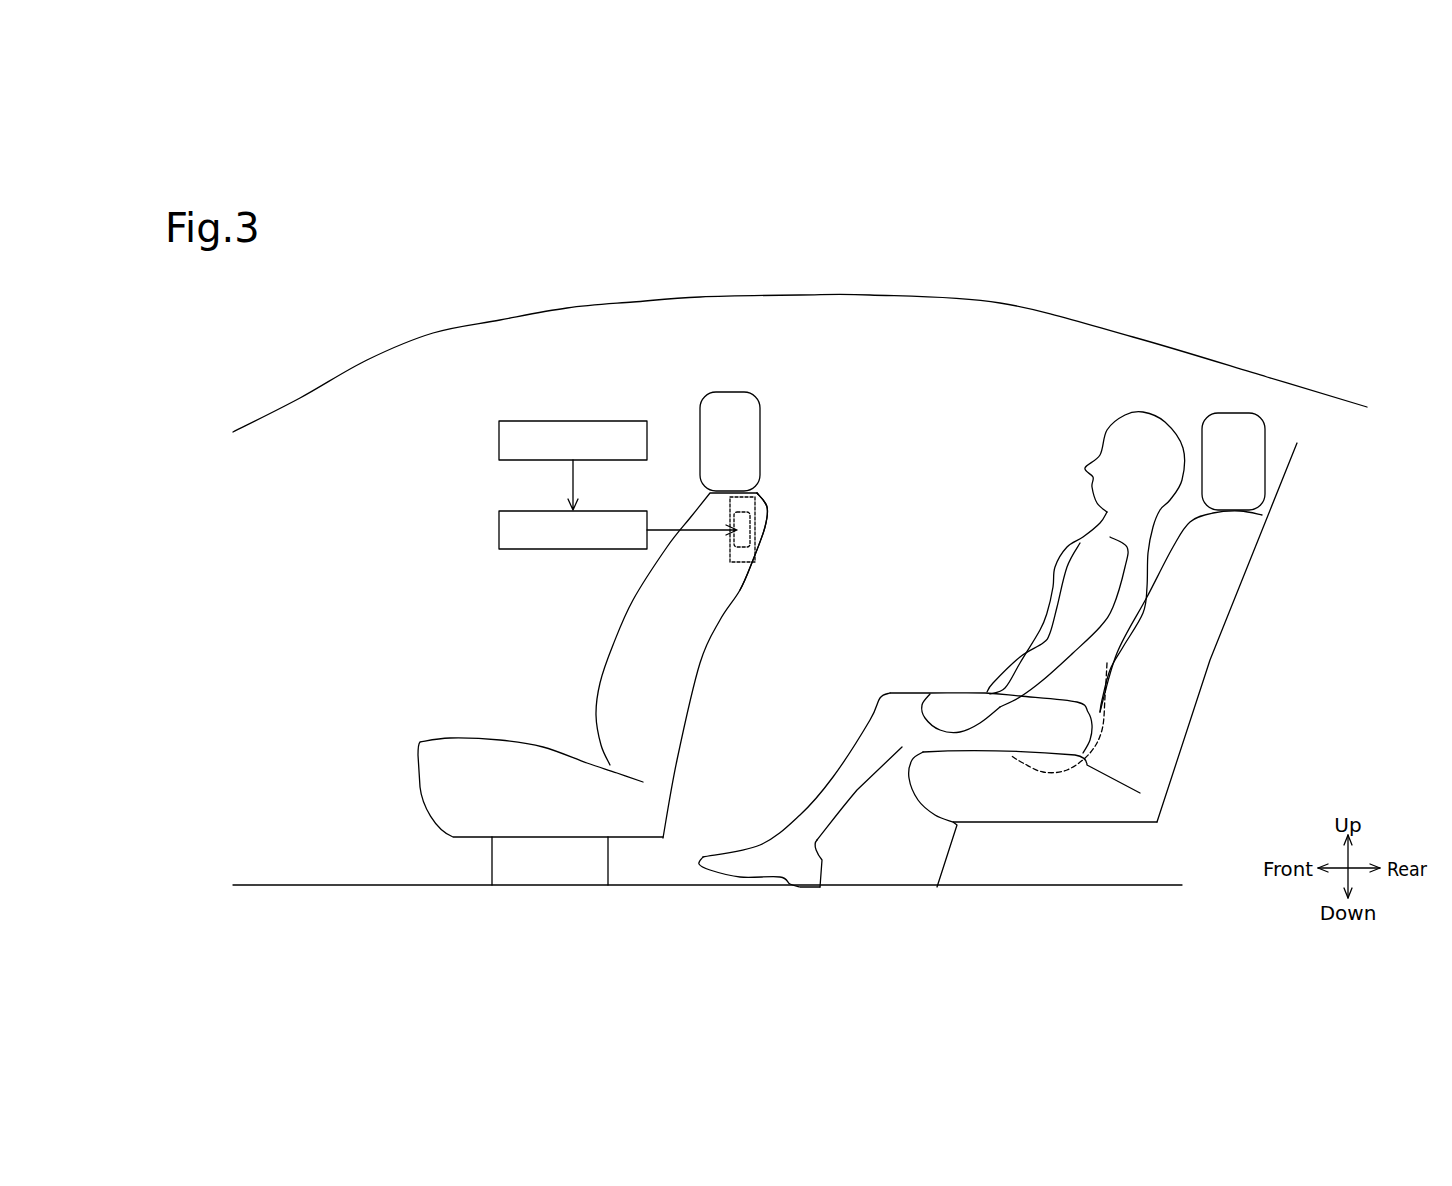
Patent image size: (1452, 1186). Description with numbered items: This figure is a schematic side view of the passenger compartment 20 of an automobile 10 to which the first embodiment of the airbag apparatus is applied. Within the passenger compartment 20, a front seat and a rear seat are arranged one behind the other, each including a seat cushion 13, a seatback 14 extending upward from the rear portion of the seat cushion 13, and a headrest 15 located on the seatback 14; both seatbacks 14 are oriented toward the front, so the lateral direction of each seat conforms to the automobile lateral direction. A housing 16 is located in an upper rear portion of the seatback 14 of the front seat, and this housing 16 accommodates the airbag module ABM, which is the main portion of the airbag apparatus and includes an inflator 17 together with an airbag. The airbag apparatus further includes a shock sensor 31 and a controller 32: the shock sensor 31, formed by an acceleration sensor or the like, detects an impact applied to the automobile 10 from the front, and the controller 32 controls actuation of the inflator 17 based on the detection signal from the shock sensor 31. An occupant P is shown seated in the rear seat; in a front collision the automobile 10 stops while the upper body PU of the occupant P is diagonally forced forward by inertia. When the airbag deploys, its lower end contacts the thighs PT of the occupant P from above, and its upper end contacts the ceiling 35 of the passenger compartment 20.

The automobile 10 is at (361, 331).
The ceiling 35 is at (847, 298).
The headrest 15 is at (730, 390).
The seatback 14 is at (702, 662).
The housing 16 is at (757, 572).
The seat cushion 13 is at (422, 803).
The passenger compartment 20 is at (438, 418).
The shock sensor 31 is at (498, 438).
The controller 32 is at (498, 528).
The inflator 17 is at (757, 515).
The airbag module ABM is at (786, 530).
The occupant P is at (948, 649).
The upper body PU is at (1053, 570).
The thighs PT is at (940, 692).